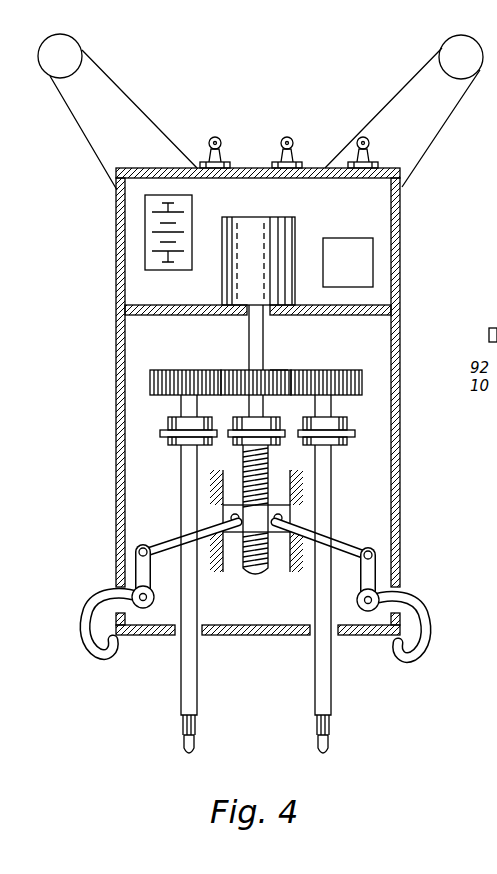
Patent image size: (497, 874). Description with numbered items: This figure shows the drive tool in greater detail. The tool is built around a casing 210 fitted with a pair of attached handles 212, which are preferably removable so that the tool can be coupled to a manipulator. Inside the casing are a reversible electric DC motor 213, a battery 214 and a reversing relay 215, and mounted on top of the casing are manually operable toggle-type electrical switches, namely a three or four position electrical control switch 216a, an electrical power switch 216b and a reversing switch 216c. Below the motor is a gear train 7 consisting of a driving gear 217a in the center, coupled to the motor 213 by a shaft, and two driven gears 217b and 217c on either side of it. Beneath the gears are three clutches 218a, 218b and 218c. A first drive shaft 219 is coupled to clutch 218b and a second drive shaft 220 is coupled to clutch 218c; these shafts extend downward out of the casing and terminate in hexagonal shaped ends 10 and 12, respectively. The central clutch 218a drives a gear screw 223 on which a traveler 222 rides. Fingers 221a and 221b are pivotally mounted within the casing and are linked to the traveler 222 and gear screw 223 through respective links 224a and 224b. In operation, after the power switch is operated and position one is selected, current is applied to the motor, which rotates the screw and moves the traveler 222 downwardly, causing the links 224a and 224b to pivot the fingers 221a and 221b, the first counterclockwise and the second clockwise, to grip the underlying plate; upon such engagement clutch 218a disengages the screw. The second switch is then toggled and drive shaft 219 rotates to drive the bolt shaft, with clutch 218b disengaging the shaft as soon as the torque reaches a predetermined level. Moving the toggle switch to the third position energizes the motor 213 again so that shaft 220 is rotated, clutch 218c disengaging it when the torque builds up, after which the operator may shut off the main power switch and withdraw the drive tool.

The casing 210 is at (401, 255).
The handles 212 is at (118, 92).
The electrical control switch 216a is at (281, 150).
The electrical power switch 216b is at (210, 150).
The reversing switch 216c is at (371, 150).
The battery 214 is at (192, 212).
The reversible electric DC motor 213 is at (265, 217).
The reversing relay 215 is at (364, 270).
The driving gear 217a is at (236, 370).
The driven gear 217b is at (174, 370).
The driven gear 217c is at (340, 358).
The gear train 7 is at (278, 370).
The clutch 218a is at (232, 440).
The clutch 218b is at (170, 441).
The clutch 218c is at (360, 448).
The gear screw 223 is at (268, 477).
The traveler 222 is at (234, 533).
The link 224a is at (166, 546).
The link 224b is at (346, 548).
The finger 221a is at (96, 656).
The finger 221b is at (412, 656).
The first drive shaft 219 is at (198, 692).
The second drive shaft 220 is at (315, 692).
The hexagonal shaped end 10 is at (183, 740).
The hexagonal shaped end 12 is at (318, 740).